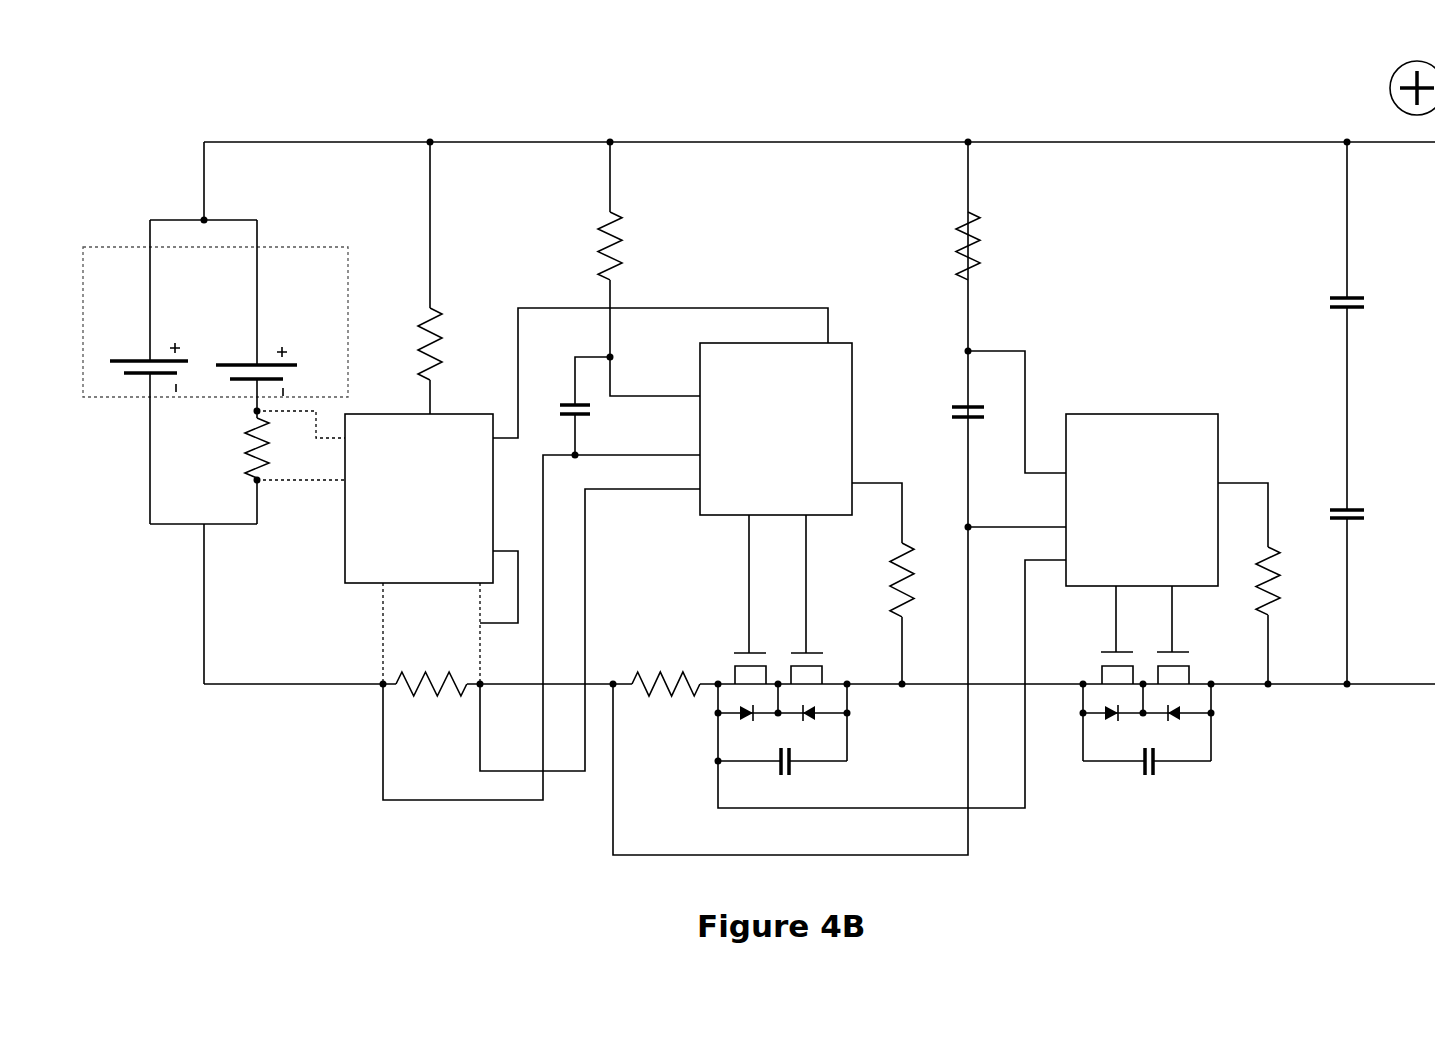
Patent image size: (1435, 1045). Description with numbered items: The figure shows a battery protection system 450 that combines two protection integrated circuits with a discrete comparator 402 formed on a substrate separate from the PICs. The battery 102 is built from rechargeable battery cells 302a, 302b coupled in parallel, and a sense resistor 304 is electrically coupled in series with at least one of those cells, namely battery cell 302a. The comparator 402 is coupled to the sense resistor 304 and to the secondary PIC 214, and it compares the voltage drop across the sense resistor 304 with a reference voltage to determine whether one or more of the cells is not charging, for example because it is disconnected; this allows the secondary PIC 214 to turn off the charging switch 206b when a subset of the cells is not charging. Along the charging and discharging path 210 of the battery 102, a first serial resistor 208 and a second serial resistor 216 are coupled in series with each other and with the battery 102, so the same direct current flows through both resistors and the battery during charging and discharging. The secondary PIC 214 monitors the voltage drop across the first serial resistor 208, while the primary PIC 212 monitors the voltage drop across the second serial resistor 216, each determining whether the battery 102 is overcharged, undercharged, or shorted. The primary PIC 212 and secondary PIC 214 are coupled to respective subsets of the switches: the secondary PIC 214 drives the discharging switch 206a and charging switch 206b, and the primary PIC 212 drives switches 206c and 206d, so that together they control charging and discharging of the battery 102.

The battery protection system 450 is at (1164, 84).
The battery 102 is at (215, 413).
The battery cell 302a is at (247, 315).
The battery cell 302b is at (138, 372).
The sense resistor 304 is at (246, 455).
The discrete comparator 402 is at (562, 413).
The secondary PIC 214 is at (737, 413).
The primary PIC 212 is at (1116, 448).
The second serial resistor 216 is at (645, 672).
The first serial resistor 208 is at (428, 704).
The charging and discharging path 210 is at (277, 688).
The discharging switch 206a is at (736, 652).
The charging switch 206b is at (821, 650).
The switch 206c is at (1098, 674).
The switch 206d is at (1193, 666).